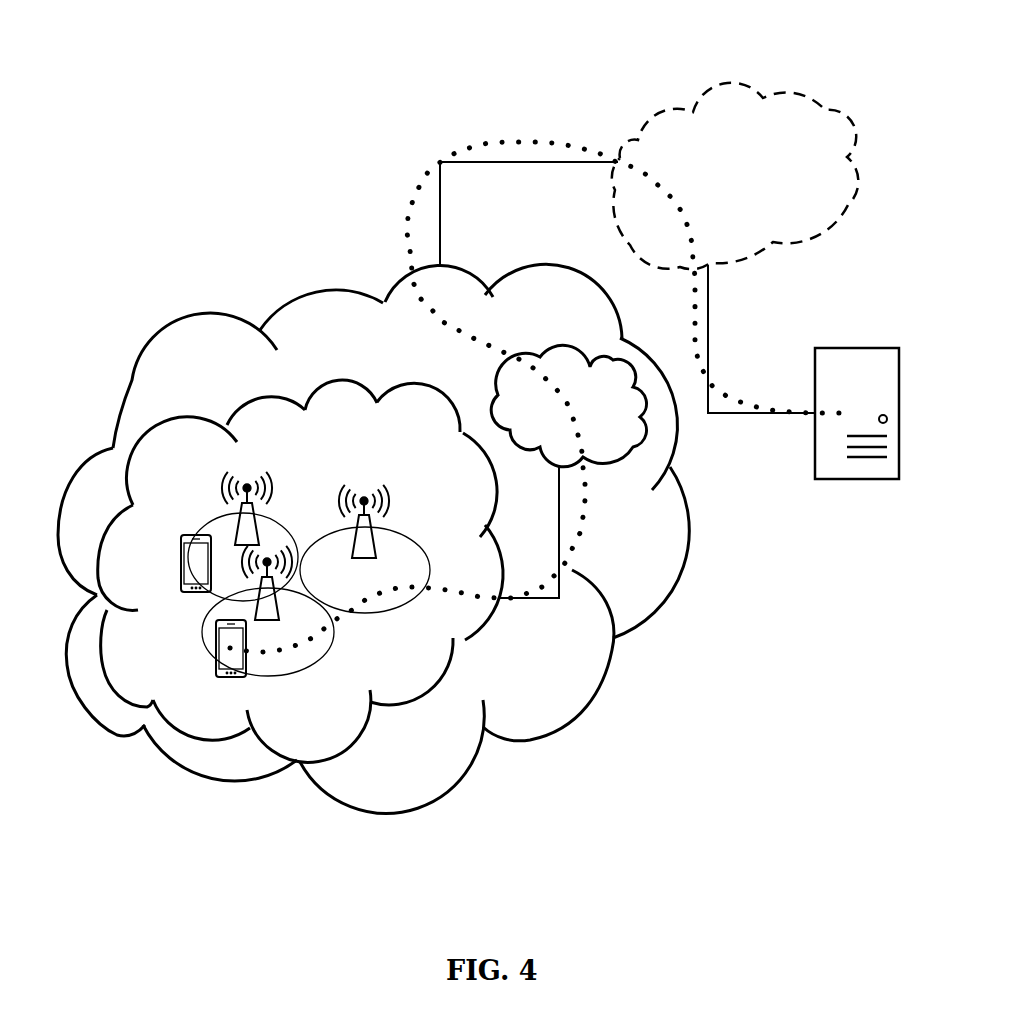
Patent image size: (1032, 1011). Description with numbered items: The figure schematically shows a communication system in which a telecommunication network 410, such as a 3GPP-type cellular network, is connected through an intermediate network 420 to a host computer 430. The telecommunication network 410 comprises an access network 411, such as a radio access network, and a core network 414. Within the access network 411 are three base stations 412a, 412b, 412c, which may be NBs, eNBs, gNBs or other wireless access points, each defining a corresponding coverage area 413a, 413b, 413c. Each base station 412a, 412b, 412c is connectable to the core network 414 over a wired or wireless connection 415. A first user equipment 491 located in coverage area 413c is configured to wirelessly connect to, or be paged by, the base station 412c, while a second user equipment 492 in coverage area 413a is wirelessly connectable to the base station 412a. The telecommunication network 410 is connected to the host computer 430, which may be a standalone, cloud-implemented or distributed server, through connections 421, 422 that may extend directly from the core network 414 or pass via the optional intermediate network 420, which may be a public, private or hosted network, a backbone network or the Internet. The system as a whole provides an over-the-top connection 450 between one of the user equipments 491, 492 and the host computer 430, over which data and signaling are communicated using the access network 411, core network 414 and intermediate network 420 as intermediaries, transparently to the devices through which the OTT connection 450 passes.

The telecommunication network 410 is at (373, 538).
The access network 411 is at (300, 571).
The base station 412a is at (280, 620).
The base station 412b is at (384, 503).
The base station 412c is at (222, 487).
The coverage area 413a is at (297, 595).
The coverage area 413b is at (430, 570).
The coverage area 413c is at (204, 526).
The core network 414 is at (568, 405).
The connection 415 is at (562, 510).
The intermediate network 420 is at (735, 176).
The connection 421 is at (523, 160).
The connection 422 is at (770, 414).
The host computer 430 is at (857, 429).
The OTT connection 450 is at (417, 187).
The first user equipment 491 is at (183, 592).
The second user equipment 492 is at (217, 677).